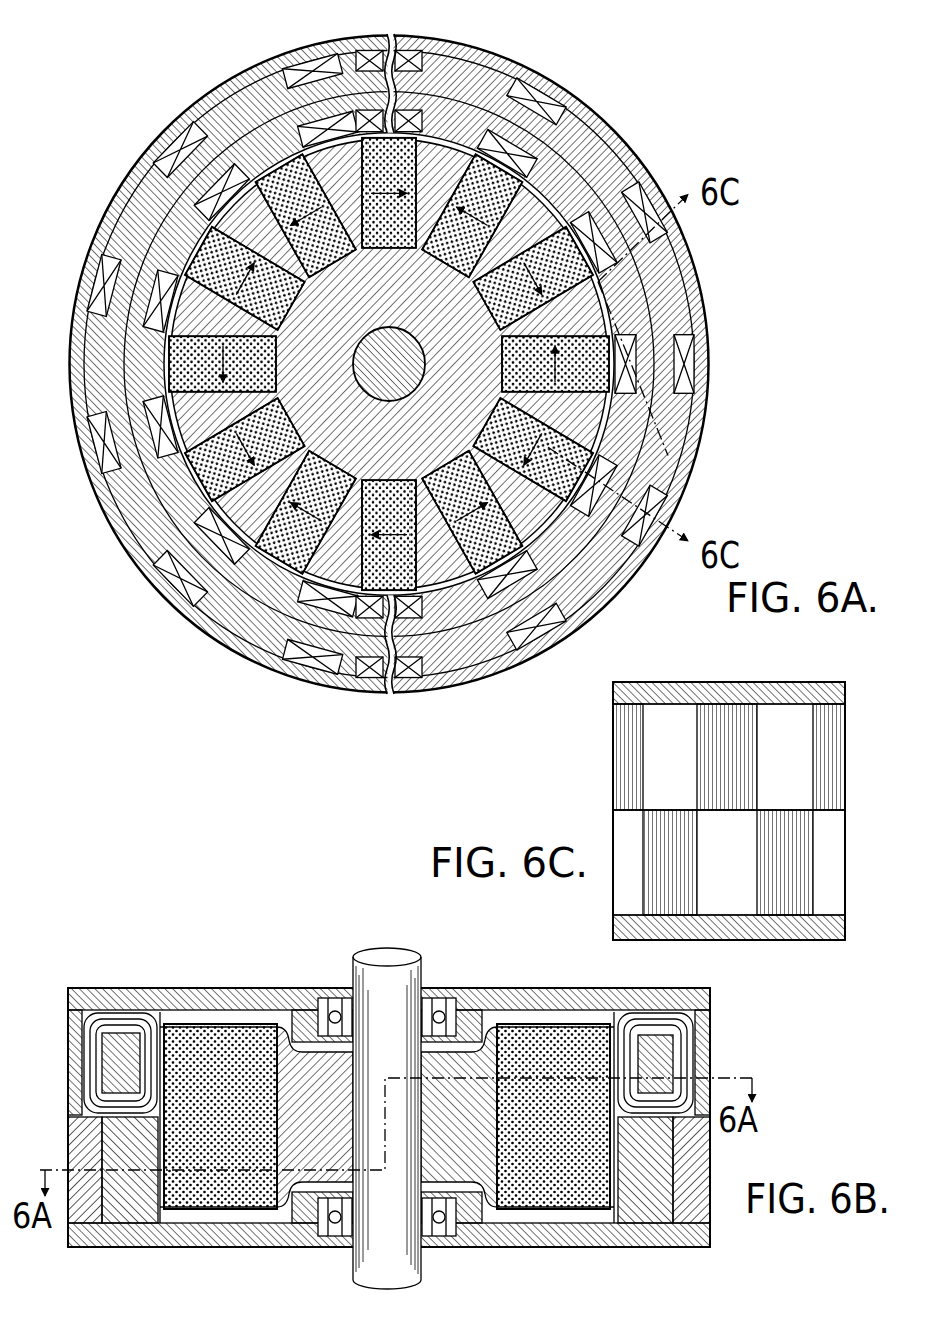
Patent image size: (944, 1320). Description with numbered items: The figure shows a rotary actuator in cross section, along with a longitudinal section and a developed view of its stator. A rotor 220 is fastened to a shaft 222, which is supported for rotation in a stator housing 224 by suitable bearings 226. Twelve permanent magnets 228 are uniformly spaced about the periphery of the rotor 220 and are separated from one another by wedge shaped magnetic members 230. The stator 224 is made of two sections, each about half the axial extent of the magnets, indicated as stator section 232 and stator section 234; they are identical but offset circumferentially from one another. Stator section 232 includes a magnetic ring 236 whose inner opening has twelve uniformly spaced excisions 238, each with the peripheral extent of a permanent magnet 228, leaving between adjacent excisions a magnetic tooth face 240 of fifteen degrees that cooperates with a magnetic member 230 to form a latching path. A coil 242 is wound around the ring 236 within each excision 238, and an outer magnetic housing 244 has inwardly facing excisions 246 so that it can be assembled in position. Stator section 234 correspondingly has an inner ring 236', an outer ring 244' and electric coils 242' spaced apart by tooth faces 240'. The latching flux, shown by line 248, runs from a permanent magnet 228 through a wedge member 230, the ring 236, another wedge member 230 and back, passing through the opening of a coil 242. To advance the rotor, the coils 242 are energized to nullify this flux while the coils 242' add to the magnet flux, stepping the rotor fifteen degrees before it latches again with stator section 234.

In FIG. 6A, the rotor 220 is at (389, 364).
In FIG. 6B, the rotor 220 is at (476, 1140).
In FIG. 6A, the shaft 222 is at (412, 364).
In FIG. 6B, the shaft 222 is at (425, 962).
In FIG. 6A, the stator housing 224 is at (400, 665).
In FIG. 6B, the stator housing 224 is at (541, 987).
In FIG. 6B, the bearings 226 is at (330, 1000).
In FIG. 6A, the permanent magnets 228 is at (389, 356).
In FIG. 6B, the permanent magnets 228 is at (387, 1116).
In FIG. 6A, the wedge shaped magnetic members 230 is at (389, 364).
In FIG. 6A, the stator section 232 is at (448, 601).
In FIG. 6A, the stator section 234 is at (389, 368).
In FIG. 6A, the magnetic ring 236 is at (389, 365).
In FIG. 6A, the inner ring 236' is at (389, 363).
In FIG. 6B, the inner ring 236' is at (410, 1204).
In FIG. 6A, the excisions 238 is at (389, 374).
In FIG. 6A, the magnetic tooth face 240 is at (389, 364).
In FIG. 6C, the magnetic tooth face 240 is at (729, 757).
In FIG. 6A, the tooth faces 240' is at (389, 364).
In FIG. 6C, the tooth faces 240' is at (729, 862).
In FIG. 6A, the coil 242 is at (455, 364).
In FIG. 6C, the coil 242 is at (729, 726).
In FIG. 6B, the coil 242 is at (427, 1062).
In FIG. 6A, the electric coils 242' is at (386, 363).
In FIG. 6C, the electric coils 242' is at (741, 889).
In FIG. 6A, the outer magnetic housing 244 is at (389, 364).
In FIG. 6B, the outer magnetic housing 244 is at (419, 1062).
In FIG. 6A, the outer ring 244' is at (389, 364).
In FIG. 6B, the outer ring 244' is at (422, 1170).
In FIG. 6A, the inwardly facing excisions 246 is at (148, 259).
In FIG. 6A, the latching flux path line 248 is at (519, 168).